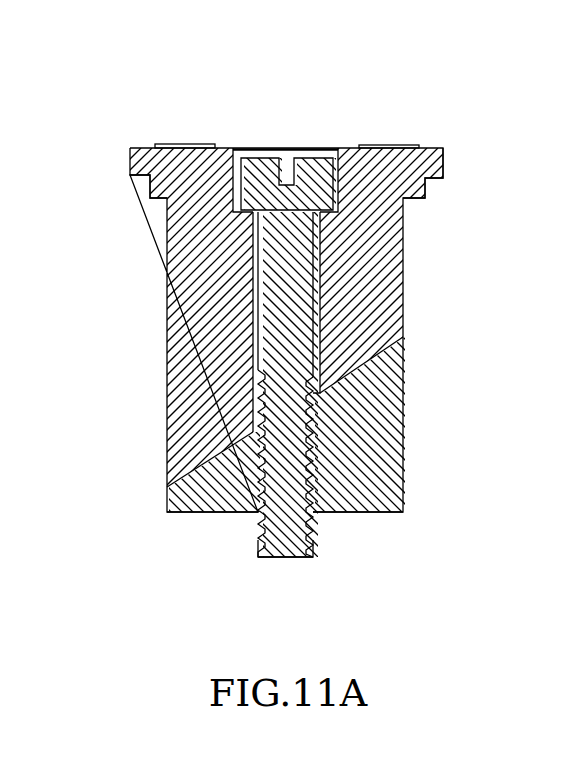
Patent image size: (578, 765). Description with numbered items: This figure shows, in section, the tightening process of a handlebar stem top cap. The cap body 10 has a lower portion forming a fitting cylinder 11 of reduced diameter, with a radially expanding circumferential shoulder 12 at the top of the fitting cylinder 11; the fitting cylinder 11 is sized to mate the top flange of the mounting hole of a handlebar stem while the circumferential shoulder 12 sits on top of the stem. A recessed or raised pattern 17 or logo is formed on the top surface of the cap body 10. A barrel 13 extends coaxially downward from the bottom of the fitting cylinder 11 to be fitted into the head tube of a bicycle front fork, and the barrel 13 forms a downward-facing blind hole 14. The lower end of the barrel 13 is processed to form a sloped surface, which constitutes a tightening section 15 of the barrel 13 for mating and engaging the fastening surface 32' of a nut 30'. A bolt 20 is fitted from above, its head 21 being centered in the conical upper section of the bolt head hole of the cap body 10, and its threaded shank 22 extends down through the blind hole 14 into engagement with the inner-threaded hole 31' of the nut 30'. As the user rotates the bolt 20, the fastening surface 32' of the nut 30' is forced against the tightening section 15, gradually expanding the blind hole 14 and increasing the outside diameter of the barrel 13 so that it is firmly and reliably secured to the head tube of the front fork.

The cap body 10 is at (435, 146).
The fitting cylinder 11 is at (428, 194).
The circumferential shoulder 12 is at (137, 178).
The barrel 13 is at (168, 386).
The blind hole 14 is at (323, 325).
The tightening section 15 is at (360, 368).
The pattern 17 is at (370, 145).
The bolt 20 is at (275, 297).
The head 21 is at (313, 162).
The threaded shank 22 is at (262, 527).
The nut 30' is at (318, 524).
The inner-threaded hole 31' is at (329, 477).
The fastening surface 32' is at (289, 355).